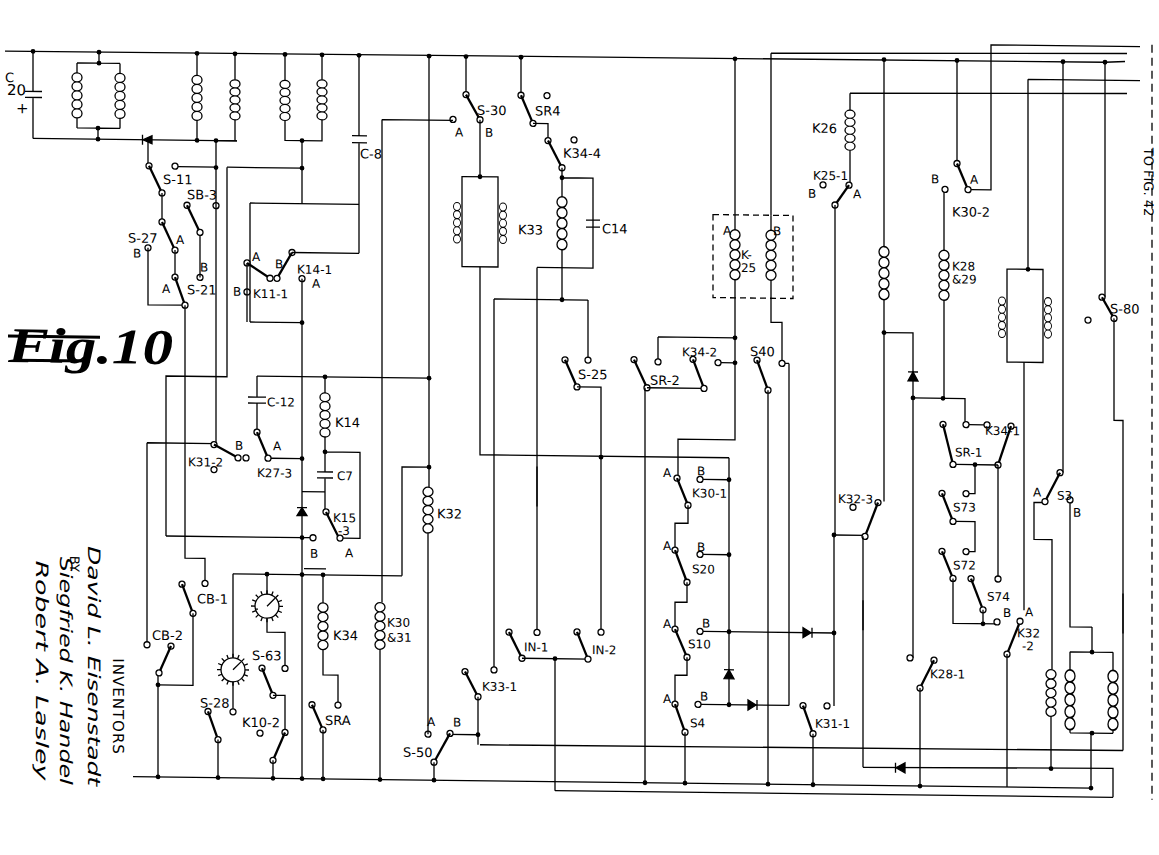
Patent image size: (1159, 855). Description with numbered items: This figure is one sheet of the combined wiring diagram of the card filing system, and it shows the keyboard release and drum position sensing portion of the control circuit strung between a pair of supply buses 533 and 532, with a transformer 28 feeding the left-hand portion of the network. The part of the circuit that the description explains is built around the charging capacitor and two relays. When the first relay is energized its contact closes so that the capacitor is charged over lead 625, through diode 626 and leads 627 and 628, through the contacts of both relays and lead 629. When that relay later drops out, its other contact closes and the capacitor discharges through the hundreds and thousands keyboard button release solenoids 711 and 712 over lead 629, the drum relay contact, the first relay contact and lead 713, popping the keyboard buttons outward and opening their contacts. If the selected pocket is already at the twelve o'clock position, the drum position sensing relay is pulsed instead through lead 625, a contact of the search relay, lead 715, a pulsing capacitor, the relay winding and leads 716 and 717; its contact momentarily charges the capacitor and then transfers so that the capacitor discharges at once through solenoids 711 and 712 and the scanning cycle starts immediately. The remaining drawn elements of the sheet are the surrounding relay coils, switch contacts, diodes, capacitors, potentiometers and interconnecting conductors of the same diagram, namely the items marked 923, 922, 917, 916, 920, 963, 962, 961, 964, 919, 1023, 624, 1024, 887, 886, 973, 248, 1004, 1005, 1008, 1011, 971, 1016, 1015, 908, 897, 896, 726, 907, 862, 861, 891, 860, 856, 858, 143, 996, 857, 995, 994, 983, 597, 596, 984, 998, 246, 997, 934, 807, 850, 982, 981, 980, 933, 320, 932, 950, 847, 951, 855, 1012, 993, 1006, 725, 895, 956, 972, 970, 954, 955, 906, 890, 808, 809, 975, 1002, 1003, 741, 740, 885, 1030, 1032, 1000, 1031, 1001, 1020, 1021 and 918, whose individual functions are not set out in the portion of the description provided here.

The positive supply bus 533 is at (28, 51).
The negative supply bus 532 is at (229, 778).
The transformer 28 is at (83, 102).
The conductor 923 is at (112, 142).
The diode 922 is at (149, 134).
The relay coil 917 is at (192, 98).
The relay coil 916 is at (240, 108).
The conductor 920 is at (235, 140).
The thousands keyboard button release solenoid 712 is at (276, 88).
The hundreds keyboard button release solenoid 711 is at (329, 92).
The conductor 963 is at (192, 165).
The conductor 962 is at (161, 208).
The conductor 961 is at (155, 265).
The conductor 964 is at (233, 165).
The conductor 919 is at (227, 362).
The conductor 1023 is at (169, 535).
The conductor 624 is at (183, 405).
The conductor 1024 is at (147, 489).
The lead 713 is at (285, 200).
The lead 629 is at (359, 200).
The lead 628 is at (272, 319).
The conductor 887 is at (470, 72).
The conductor 886 is at (384, 436).
The conductor 973 is at (477, 160).
The card compartment solenoids 248 is at (510, 180).
The conductor 1004 is at (529, 72).
The conductor 1005 is at (563, 283).
The conductor 1008 is at (505, 292).
The conductor 1011 is at (536, 344).
The conductor 971 is at (626, 449).
The conductor 1016 is at (561, 486).
The conductor 1015 is at (598, 538).
The conductor 908 is at (735, 121).
The conductor 897 is at (771, 102).
The conductor 896 is at (782, 322).
The conductor 726 is at (690, 329).
The conductor 907 is at (728, 414).
The conductor 862 is at (850, 83).
The conductor 861 is at (835, 375).
The conductor 891 is at (831, 657).
The conductor 860 is at (850, 651).
The conductor 856 is at (863, 604).
The conductor 858 is at (884, 195).
The relay coil 143 is at (888, 248).
The conductor 996 is at (889, 315).
The conductor 857 is at (878, 422).
The diode 995 is at (906, 366).
The conductor 994 is at (912, 548).
The conductor 983 is at (966, 387).
The conductor 597 is at (953, 125).
The conductor 596 is at (1061, 118).
The conductor 984 is at (943, 340).
The conductor 998 is at (1026, 153).
The card compartment solenoids 246 is at (1009, 243).
The conductor 997 is at (1028, 390).
The conductor 934 is at (1062, 390).
The conductor 807 is at (1122, 457).
The conductor 850 is at (1122, 596).
The conductor 982 is at (962, 469).
The conductor 981 is at (953, 610).
The conductor 980 is at (1005, 660).
The conductor 933 is at (1051, 562).
The relay coil 320 is at (1046, 676).
The conductor 932 is at (1044, 727).
The conductor 950 is at (1071, 548).
The conductor 847 is at (1107, 762).
The conductor 951 is at (1091, 754).
The diode 855 is at (898, 747).
The conductor 1012 is at (555, 686).
The conductor 993 is at (922, 709).
The conductor 1006 is at (599, 424).
The conductor 725 is at (644, 582).
The conductor 895 is at (766, 416).
The conductor 956 is at (790, 483).
The conductor 972 is at (721, 465).
The conductor 970 is at (681, 666).
The conductor 954 is at (717, 697).
The diode 955 is at (751, 690).
The conductor 906 is at (686, 765).
The conductor 890 is at (812, 763).
The conductor 808 is at (468, 738).
The conductor 809 is at (441, 764).
The conductor 975 is at (428, 625).
The lead 717 is at (426, 330).
The lead 716 is at (396, 373).
The conductor 1002 is at (258, 571).
The lead 625 is at (329, 569).
The conductor 1003 is at (358, 573).
The conductor 741 is at (334, 672).
The conductor 740 is at (325, 757).
The conductor 885 is at (382, 698).
The potentiometer 1030 is at (277, 621).
The potentiometer wiper 1032 is at (256, 610).
The potentiometer 1000 is at (226, 646).
The conductor 1031 is at (271, 762).
The conductor 1001 is at (215, 758).
The conductor 1020 is at (159, 711).
The conductor 1021 is at (195, 649).
The capacitor lead 918 is at (254, 414).
The lead 627 is at (307, 356).
The lead 715 is at (301, 489).
The diode 626 is at (296, 511).